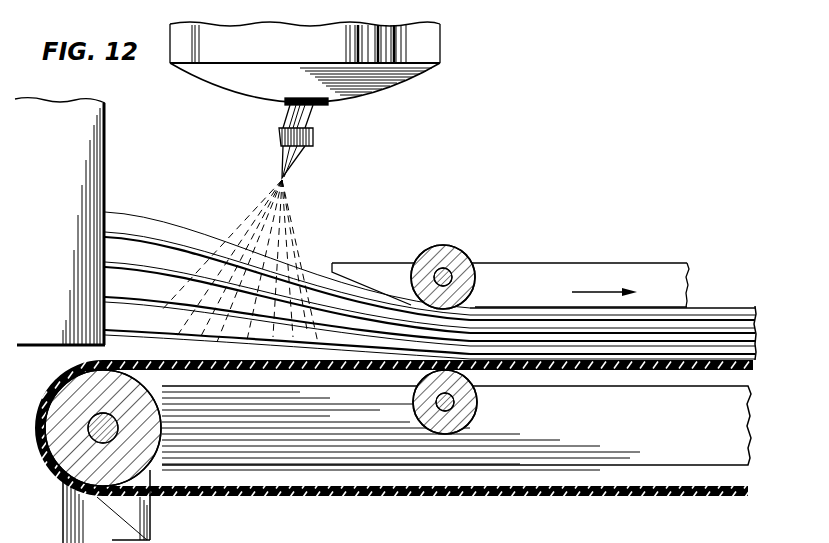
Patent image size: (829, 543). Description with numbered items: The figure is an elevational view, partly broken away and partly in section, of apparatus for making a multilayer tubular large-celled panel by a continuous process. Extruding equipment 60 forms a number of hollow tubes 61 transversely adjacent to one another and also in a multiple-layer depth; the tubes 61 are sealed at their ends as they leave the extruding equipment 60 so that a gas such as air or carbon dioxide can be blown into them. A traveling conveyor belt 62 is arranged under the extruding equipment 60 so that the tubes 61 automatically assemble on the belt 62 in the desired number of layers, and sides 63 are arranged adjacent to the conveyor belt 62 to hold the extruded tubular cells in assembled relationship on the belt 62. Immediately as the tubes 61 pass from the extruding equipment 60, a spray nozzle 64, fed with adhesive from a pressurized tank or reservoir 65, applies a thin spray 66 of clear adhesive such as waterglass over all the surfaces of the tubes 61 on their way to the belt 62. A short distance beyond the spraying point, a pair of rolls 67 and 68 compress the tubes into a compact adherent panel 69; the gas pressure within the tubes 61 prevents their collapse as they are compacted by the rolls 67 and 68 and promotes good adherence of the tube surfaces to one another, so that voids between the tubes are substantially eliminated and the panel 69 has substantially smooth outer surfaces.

The extruding equipment 60 is at (87, 160).
The hollow tubes 61 is at (120, 320).
The traveling conveyor belt 62 is at (320, 368).
The sides 63 is at (368, 270).
The spray nozzle 64 is at (298, 152).
The pressurized tank or reservoir 65 is at (357, 86).
The spray 66 is at (284, 233).
The roll 67 is at (457, 251).
The roll 68 is at (470, 412).
The compact adherent panel 69 is at (698, 301).